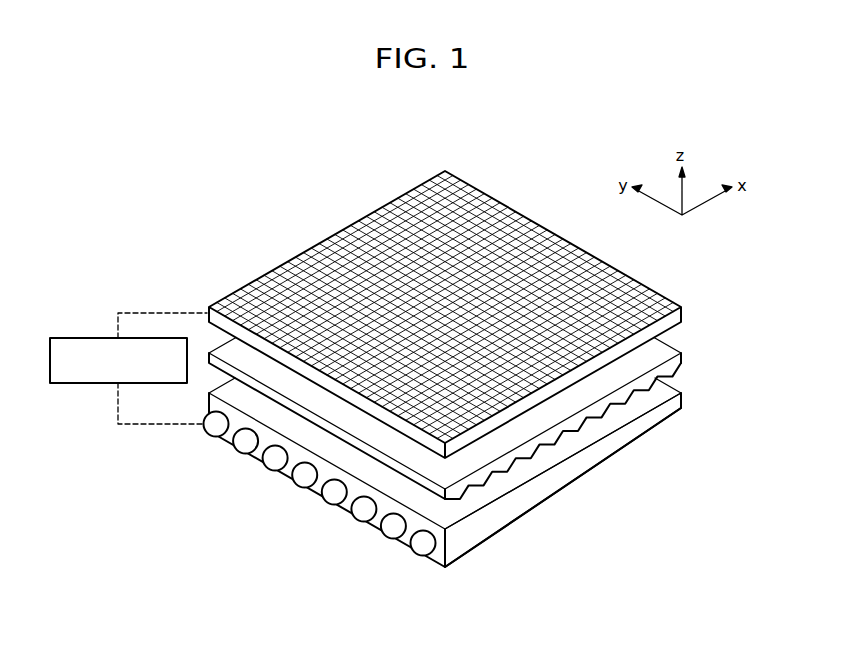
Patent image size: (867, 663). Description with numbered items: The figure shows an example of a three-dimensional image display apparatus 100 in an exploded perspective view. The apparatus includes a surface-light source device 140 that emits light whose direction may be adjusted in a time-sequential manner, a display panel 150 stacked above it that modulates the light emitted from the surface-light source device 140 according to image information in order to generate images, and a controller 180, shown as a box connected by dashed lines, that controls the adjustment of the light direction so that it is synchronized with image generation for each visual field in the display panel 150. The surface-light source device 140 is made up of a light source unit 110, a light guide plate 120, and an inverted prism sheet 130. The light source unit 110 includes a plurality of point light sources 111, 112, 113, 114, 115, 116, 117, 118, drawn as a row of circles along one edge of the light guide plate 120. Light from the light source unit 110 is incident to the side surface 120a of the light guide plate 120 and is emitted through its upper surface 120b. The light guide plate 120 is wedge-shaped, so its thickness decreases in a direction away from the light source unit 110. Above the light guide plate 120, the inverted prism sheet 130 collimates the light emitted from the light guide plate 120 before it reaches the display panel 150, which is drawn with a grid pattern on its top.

The 3D image display apparatus 100 is at (284, 203).
The light source unit 110 is at (430, 565).
The point light source 111 is at (413, 554).
The point light source 112 is at (383, 537).
The point light source 113 is at (354, 520).
The point light source 114 is at (324, 503).
The point light source 115 is at (295, 486).
The point light source 116 is at (265, 469).
The point light source 117 is at (236, 452).
The point light source 118 is at (206, 435).
The light guide plate 120 is at (683, 401).
The side surface 120a is at (440, 545).
The upper surface 120b is at (605, 430).
The inverted prism sheet 130 is at (683, 362).
The surface-light source device 140 is at (753, 355).
The display panel 150 is at (683, 315).
The controller 180 is at (93, 338).